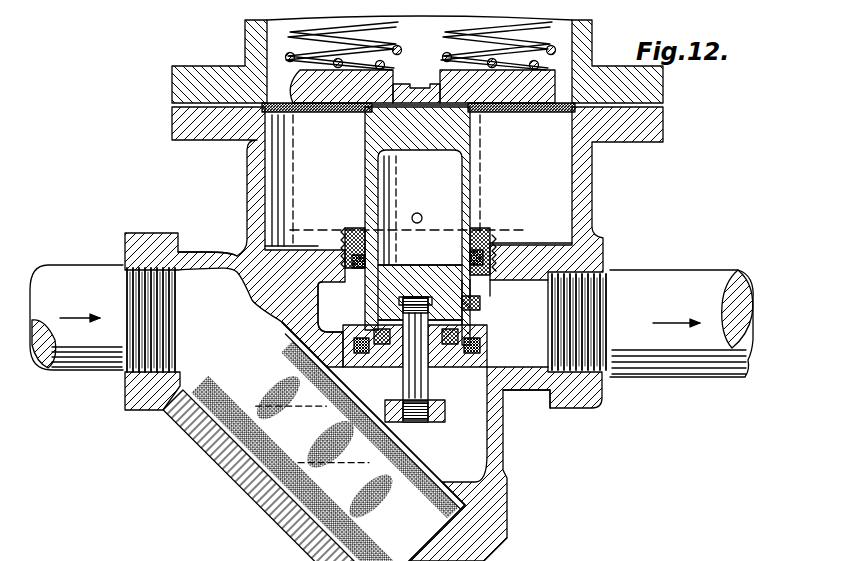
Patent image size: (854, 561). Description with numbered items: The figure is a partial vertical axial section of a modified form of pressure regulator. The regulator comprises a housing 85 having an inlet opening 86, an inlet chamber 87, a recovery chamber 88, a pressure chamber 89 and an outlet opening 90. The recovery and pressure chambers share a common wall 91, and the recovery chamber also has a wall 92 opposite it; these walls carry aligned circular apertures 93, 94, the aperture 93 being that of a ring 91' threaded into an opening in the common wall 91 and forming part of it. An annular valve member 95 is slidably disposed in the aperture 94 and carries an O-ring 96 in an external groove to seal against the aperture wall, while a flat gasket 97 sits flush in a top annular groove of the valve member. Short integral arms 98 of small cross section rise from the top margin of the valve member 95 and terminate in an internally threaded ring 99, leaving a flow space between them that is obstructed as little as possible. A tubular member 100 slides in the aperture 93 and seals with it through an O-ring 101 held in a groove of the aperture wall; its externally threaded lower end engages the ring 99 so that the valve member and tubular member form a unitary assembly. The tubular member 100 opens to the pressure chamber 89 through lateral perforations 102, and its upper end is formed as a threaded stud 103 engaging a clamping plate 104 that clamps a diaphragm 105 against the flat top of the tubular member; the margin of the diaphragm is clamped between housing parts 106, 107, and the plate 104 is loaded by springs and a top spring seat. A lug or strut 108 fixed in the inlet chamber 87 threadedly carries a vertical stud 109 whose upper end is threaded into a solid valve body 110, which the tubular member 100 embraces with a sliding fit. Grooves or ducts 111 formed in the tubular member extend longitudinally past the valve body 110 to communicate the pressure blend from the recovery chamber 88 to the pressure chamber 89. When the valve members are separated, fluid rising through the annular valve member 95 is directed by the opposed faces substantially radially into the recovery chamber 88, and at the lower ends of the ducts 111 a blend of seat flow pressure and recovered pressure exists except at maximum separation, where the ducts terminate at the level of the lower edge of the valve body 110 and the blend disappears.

The housing 85 is at (598, 212).
The inlet opening 86 is at (197, 280).
The inlet chamber 87 is at (478, 428).
The recovery chamber 88 is at (321, 282).
The pressure chamber 89 is at (565, 172).
The outlet opening 90 is at (532, 364).
The common wall 91 is at (502, 244).
The ring 91' is at (504, 227).
The wall 92 is at (352, 345).
The circular aperture 93 is at (476, 245).
The circular aperture 94 is at (380, 355).
The annular valve member 95 is at (448, 350).
The O-ring 96 is at (488, 345).
The flat gasket 97 is at (470, 310).
The arms 98 is at (456, 327).
The internally threaded ring 99 is at (322, 286).
The tubular member 100 is at (470, 165).
The O-ring 101 is at (356, 240).
The lateral perforations 102 is at (455, 218).
The threaded stud 103 is at (424, 96).
The clamping plate 104 is at (486, 108).
The diaphragm 105 is at (332, 106).
The housing part 106 is at (650, 91).
The housing part 107 is at (650, 123).
The lug or strut 108 is at (433, 420).
The vertical stud 109 is at (407, 386).
The solid valve body 110 is at (396, 278).
The grooves or ducts 111 is at (452, 266).